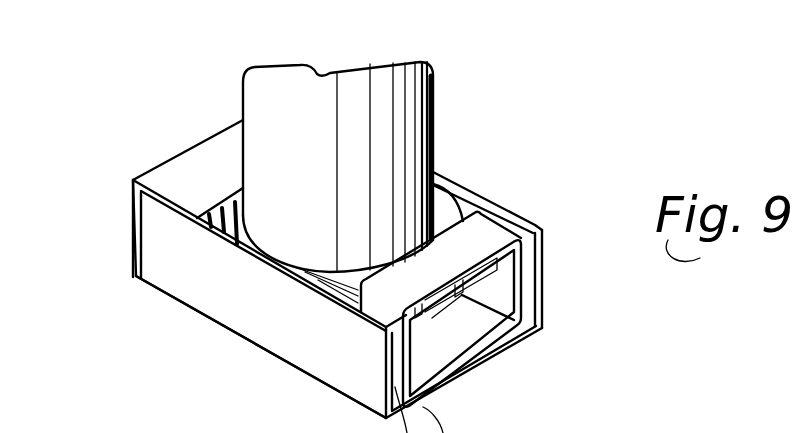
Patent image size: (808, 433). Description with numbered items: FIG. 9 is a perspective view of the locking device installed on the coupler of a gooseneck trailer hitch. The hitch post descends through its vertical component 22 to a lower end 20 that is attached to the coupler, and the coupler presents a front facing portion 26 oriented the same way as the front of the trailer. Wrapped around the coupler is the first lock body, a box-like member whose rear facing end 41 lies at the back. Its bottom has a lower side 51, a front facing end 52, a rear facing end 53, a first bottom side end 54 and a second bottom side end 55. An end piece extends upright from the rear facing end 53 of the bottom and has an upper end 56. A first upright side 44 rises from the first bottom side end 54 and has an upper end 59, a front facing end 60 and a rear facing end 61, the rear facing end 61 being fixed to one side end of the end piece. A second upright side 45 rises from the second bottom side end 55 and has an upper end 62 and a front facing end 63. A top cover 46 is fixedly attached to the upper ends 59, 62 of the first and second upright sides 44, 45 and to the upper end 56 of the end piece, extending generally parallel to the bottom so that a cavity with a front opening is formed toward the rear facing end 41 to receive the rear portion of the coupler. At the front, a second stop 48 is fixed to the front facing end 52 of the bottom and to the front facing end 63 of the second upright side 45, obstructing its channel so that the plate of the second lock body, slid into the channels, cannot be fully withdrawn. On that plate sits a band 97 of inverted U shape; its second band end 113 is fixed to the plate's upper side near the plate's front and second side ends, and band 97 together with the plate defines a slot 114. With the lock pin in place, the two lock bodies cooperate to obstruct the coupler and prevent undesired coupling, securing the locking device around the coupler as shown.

The lower end 20 is at (333, 277).
The vertical component 22 is at (330, 93).
The front facing portion 26 is at (473, 277).
The rear facing end 41 is at (177, 150).
The first upright side 44 is at (188, 293).
The second upright side 45 is at (475, 192).
The top cover 46 is at (233, 130).
The second stop 48 is at (543, 322).
The lower side 51 is at (462, 365).
The front facing end 52 is at (493, 348).
The rear facing end 53 is at (132, 267).
The first bottom side end 54 is at (385, 418).
The second bottom side end 55 is at (532, 325).
The upper end 56 is at (133, 182).
The upper end 59 is at (283, 268).
The front facing end 60 is at (382, 350).
The rear facing end 61 is at (133, 213).
The upper end 62 is at (447, 175).
The front facing end 63 is at (543, 295).
The band 97 is at (483, 238).
The second band end 113 is at (508, 335).
The slot 114 is at (527, 285).